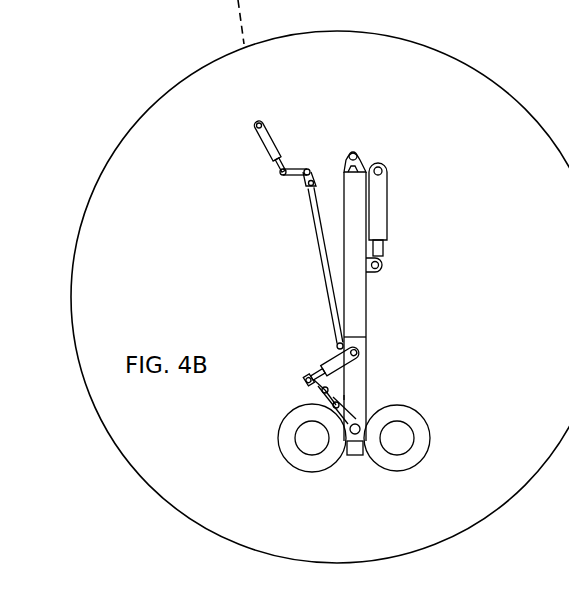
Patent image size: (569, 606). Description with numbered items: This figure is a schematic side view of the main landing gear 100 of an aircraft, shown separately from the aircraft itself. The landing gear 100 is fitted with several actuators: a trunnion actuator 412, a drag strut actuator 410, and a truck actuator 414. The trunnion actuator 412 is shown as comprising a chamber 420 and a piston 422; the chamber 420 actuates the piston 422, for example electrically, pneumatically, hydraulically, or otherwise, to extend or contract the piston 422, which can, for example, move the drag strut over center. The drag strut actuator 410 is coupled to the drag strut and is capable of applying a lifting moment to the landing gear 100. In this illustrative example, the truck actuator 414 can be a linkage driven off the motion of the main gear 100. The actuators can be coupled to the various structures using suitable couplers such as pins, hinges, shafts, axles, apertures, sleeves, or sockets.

The main landing gear 100 is at (366, 312).
The drag strut actuator 410 is at (386, 208).
The trunnion actuator 412 is at (268, 134).
The truck actuator 414 is at (348, 363).
The chamber 420 is at (266, 148).
The piston 422 is at (282, 175).